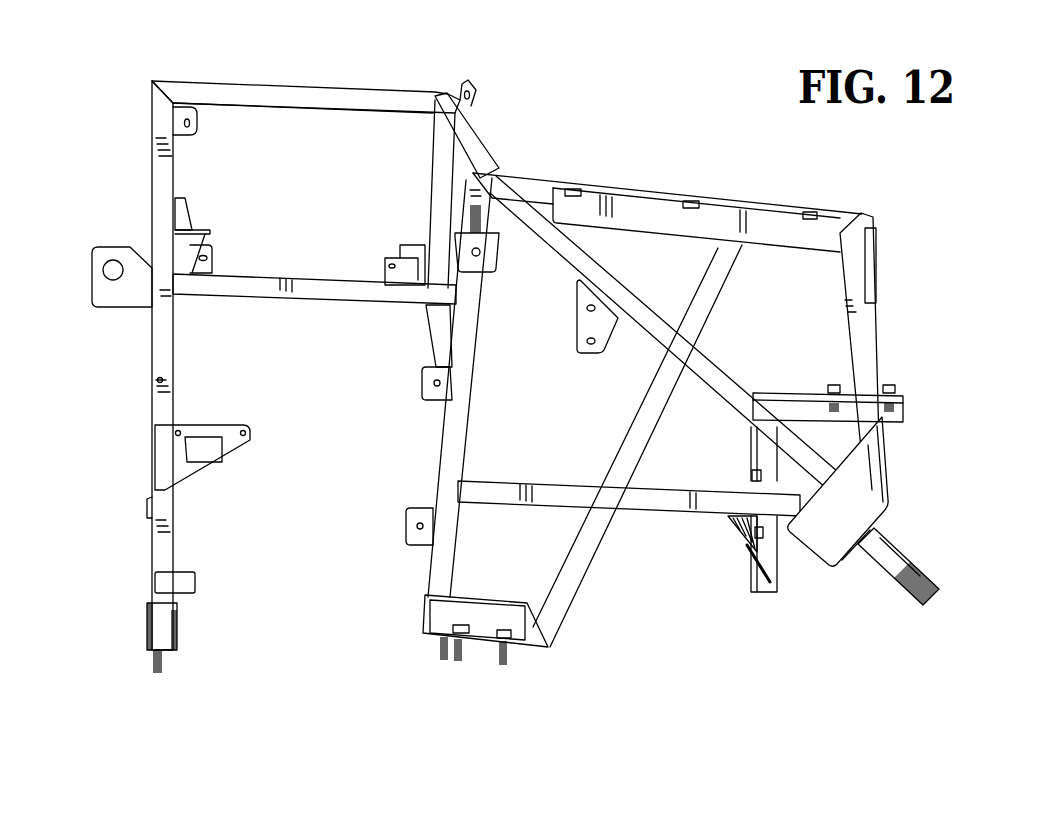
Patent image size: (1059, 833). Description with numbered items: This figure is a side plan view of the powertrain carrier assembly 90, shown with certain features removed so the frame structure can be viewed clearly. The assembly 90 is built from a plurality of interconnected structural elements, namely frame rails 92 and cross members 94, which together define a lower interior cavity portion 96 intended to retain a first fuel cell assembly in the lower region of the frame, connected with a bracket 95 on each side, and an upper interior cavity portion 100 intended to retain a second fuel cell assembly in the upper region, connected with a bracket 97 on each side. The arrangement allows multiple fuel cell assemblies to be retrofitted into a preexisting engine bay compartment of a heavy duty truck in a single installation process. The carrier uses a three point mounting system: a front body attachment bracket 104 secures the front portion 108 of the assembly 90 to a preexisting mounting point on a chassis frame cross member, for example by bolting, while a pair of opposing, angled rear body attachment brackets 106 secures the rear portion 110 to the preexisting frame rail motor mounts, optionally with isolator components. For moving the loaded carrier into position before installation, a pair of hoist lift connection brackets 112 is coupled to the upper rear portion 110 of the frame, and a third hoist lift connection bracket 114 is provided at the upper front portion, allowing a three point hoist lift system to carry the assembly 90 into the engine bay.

The powertrain carrier assembly 90 is at (862, 186).
The frame rails 92 is at (320, 92).
The cross members 94 is at (313, 284).
The bracket 95 is at (482, 612).
The lower interior cavity portion 96 is at (300, 635).
The bracket 97 is at (731, 222).
The upper interior cavity portion 100 is at (690, 172).
The front body attachment bracket 104 is at (143, 627).
The angled attachment bracket 106 is at (880, 527).
The front portion 108 is at (128, 679).
The rear portion 110 is at (846, 618).
The hoist lift connection bracket 112 is at (872, 260).
The hoist lift connection bracket 114 is at (112, 252).